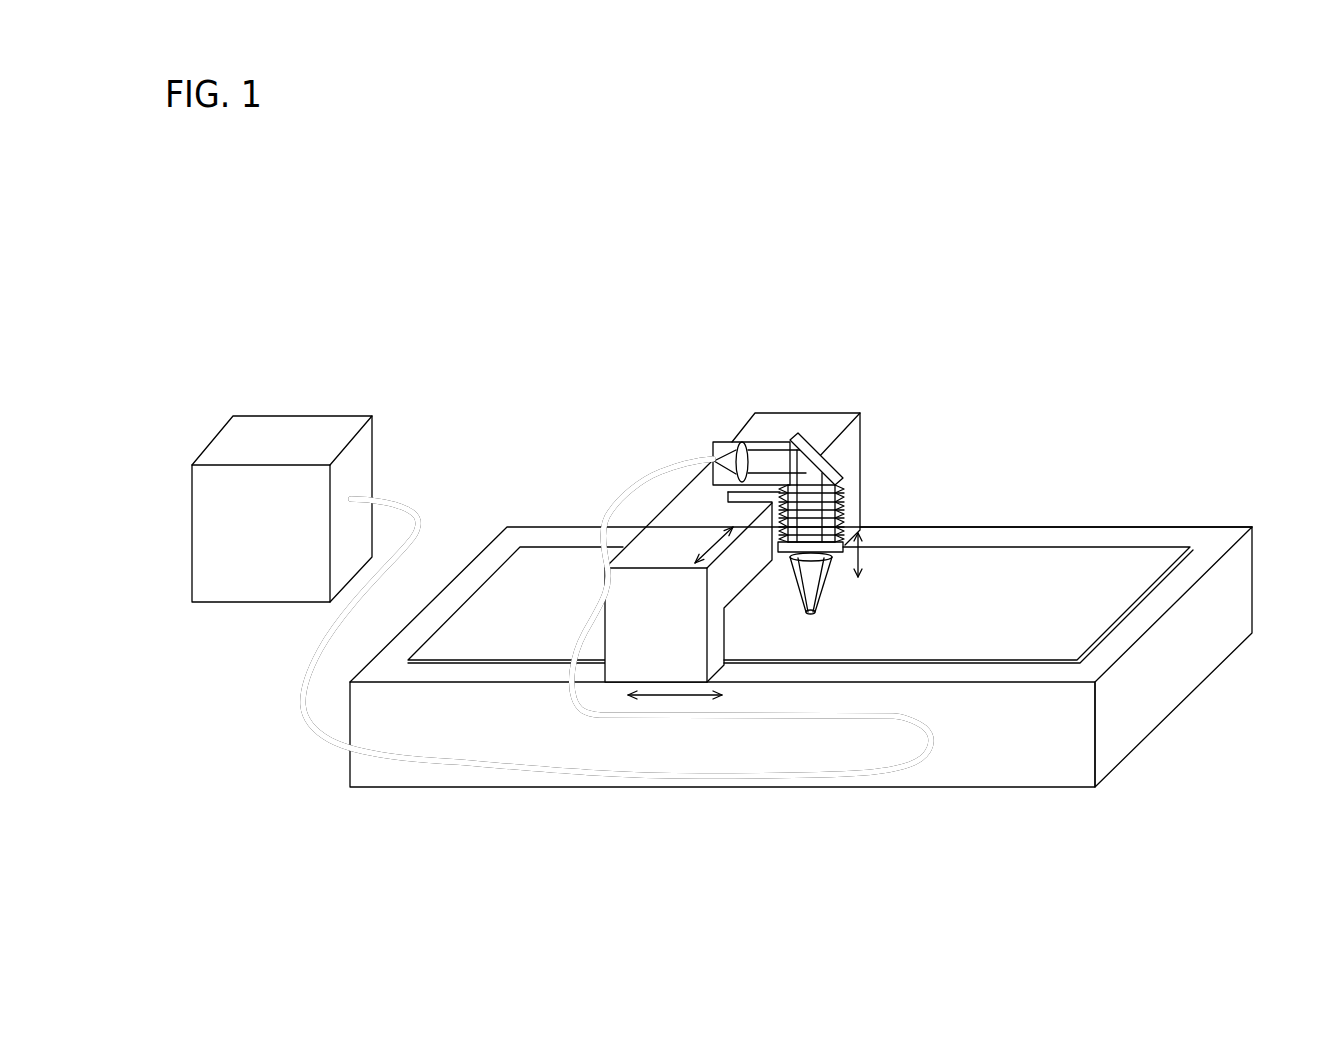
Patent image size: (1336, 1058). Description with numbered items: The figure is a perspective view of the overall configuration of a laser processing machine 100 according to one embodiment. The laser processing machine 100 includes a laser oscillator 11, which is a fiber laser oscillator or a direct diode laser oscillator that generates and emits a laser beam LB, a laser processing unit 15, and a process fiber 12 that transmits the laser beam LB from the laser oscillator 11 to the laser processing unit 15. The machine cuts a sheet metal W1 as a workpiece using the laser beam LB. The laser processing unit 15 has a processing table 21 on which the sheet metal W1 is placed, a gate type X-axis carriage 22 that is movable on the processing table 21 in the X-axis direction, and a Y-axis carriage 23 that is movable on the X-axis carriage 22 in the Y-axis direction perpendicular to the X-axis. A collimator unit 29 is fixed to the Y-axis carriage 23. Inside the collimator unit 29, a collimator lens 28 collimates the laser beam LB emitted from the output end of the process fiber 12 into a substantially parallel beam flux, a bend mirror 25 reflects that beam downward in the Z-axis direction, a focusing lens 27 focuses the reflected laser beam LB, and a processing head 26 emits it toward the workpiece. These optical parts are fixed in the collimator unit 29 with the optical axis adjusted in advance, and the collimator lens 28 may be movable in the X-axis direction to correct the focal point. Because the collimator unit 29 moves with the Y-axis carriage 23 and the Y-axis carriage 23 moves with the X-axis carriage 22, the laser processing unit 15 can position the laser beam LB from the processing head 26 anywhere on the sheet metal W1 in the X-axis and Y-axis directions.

The laser processing machine 100 is at (809, 302).
The laser oscillator 11 is at (292, 426).
The process fiber 12 is at (561, 778).
The laser processing unit 15 is at (947, 527).
The processing table 21 is at (1100, 535).
The X-axis carriage 22 is at (862, 442).
The Y-axis carriage 23 is at (767, 533).
The bend mirror 25 is at (815, 440).
The processing head 26 is at (822, 600).
The focusing lens 27 is at (809, 600).
The collimator lens 28 is at (743, 440).
The collimator unit 29 is at (712, 458).
The laser beam LB is at (773, 445).
The sheet metal W1 is at (1004, 560).